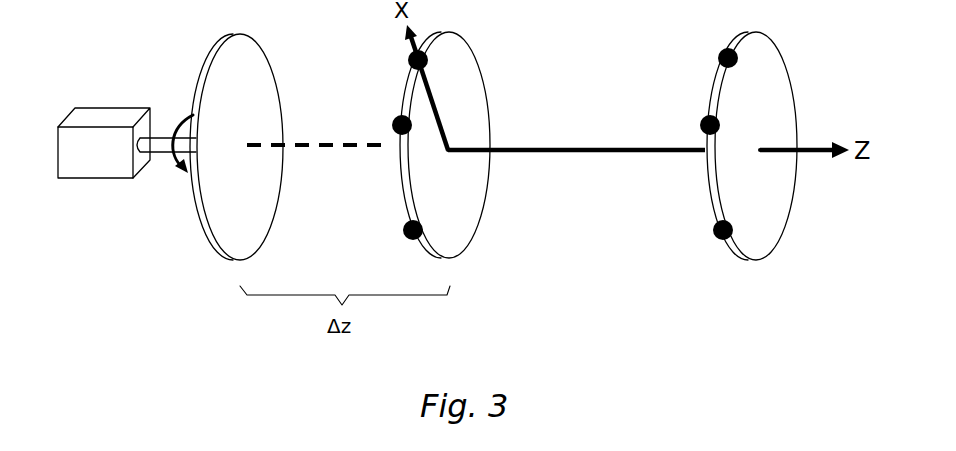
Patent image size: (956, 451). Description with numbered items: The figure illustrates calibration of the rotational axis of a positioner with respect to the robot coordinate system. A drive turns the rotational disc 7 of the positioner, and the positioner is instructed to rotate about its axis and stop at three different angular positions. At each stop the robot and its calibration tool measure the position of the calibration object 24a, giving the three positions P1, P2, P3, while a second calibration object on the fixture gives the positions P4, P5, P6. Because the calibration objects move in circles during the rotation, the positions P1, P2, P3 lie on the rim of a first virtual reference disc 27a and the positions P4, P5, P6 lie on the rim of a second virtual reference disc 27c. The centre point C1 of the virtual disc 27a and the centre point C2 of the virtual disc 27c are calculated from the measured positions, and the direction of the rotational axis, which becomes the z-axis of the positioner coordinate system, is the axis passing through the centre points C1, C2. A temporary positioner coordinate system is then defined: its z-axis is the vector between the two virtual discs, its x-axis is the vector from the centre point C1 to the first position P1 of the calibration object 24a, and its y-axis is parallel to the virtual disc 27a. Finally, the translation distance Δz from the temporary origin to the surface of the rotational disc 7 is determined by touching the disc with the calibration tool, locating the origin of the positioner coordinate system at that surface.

The rotational disc 7 is at (257, 60).
The calibration object 24a is at (428, 61).
The virtual reference disc 27a is at (462, 202).
The virtual reference disc 27c is at (773, 202).
The centre point of virtual disc C1 is at (452, 147).
The centre point of virtual disc C2 is at (762, 147).
The position of calibration object P1 is at (399, 62).
The position of calibration object P2 is at (384, 125).
The position of calibration object P3 is at (396, 231).
The position of calibration object P4 is at (708, 58).
The position of calibration object P5 is at (693, 125).
The position of calibration object P6 is at (705, 232).